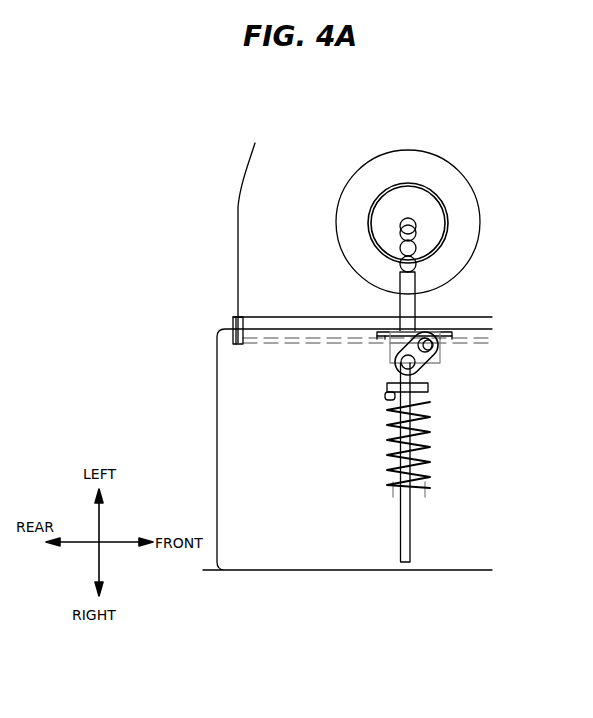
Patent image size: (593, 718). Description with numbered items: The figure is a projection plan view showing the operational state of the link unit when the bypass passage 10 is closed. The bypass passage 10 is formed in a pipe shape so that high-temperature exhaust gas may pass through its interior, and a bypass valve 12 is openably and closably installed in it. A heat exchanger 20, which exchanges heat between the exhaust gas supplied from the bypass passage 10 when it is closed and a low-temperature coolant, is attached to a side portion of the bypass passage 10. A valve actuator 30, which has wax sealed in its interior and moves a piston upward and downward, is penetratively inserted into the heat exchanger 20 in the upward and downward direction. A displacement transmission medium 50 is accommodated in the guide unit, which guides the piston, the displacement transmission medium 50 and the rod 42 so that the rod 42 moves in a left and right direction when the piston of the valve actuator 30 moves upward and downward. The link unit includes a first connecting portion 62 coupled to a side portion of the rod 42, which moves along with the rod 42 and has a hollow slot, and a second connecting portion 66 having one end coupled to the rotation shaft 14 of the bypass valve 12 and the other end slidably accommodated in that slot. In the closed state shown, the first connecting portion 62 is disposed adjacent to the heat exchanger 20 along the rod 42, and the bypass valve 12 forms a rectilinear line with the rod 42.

The bypass passage 10 is at (307, 490).
The bypass valve 12 is at (403, 528).
The rotation shaft 14 is at (402, 362).
The heat exchanger 20 is at (283, 225).
The valve actuator 30 is at (410, 198).
The rod 42 is at (410, 287).
The displacement transmission medium 50 is at (413, 227).
The first connecting portion 62 is at (440, 353).
The second connecting portion 66 is at (425, 368).